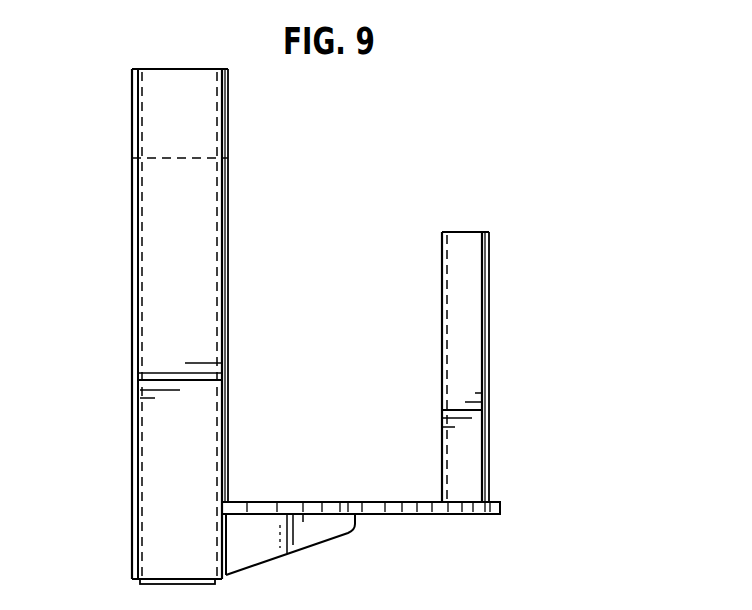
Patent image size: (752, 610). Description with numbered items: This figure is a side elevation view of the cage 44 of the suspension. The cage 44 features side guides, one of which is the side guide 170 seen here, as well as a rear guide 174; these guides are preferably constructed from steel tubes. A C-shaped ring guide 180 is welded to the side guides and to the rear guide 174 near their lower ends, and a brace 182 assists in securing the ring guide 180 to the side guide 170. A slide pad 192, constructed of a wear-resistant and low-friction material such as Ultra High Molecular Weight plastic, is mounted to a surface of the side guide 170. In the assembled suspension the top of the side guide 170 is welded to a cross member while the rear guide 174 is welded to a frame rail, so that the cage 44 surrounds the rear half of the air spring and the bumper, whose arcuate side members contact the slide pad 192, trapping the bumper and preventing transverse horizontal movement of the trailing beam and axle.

The cage 44 is at (548, 238).
The side guide 170 is at (132, 452).
The rear guide 174 is at (443, 365).
The C-shaped ring guide 180 is at (395, 503).
The brace 182 is at (310, 546).
The slide pad 192 is at (203, 158).